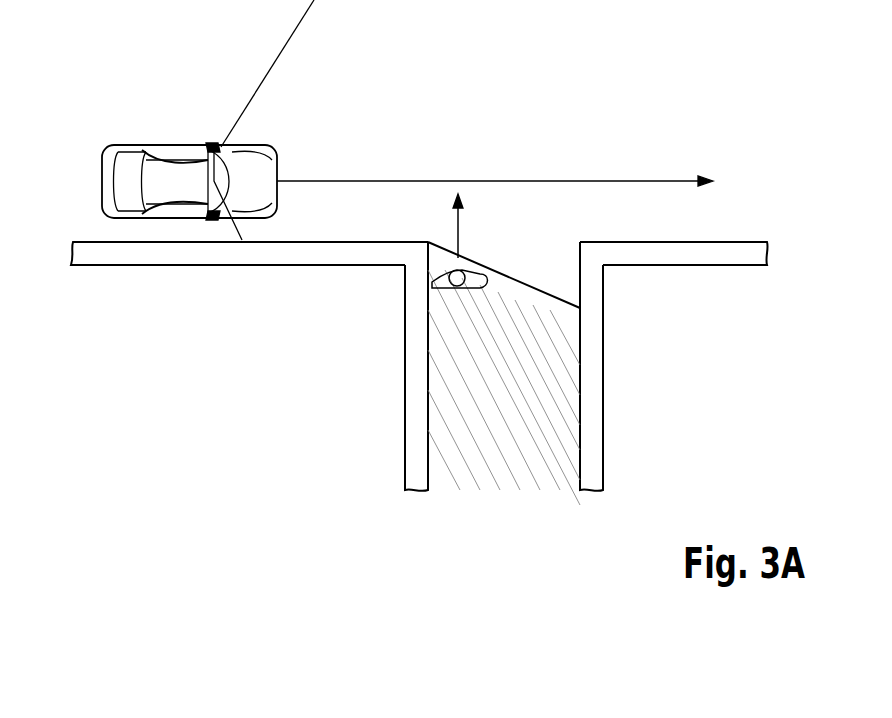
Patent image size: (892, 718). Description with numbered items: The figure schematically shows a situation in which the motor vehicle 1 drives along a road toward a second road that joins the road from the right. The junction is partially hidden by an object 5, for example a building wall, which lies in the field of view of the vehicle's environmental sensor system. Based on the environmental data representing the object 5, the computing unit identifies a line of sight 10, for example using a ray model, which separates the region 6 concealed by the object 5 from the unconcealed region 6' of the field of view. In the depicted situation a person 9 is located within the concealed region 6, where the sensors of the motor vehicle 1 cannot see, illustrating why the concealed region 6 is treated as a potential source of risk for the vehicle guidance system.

The motor vehicle 1 is at (133, 146).
The object 5 is at (188, 265).
The concealed region 6 is at (475, 373).
The unconcealed region 6' is at (495, 160).
The person 9 is at (432, 283).
The line of sight 10 is at (558, 300).